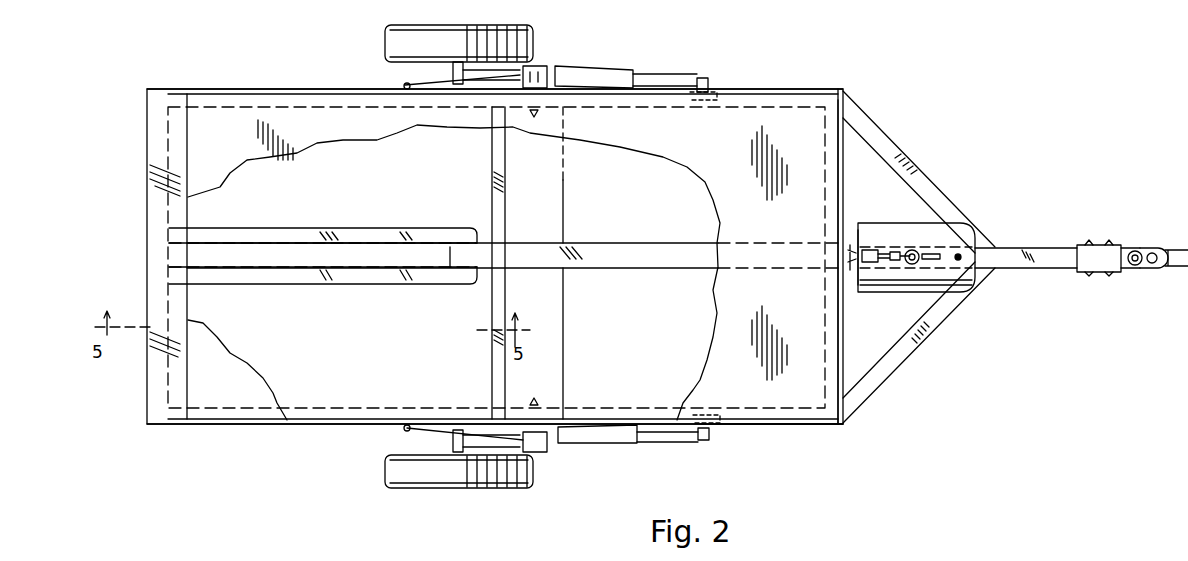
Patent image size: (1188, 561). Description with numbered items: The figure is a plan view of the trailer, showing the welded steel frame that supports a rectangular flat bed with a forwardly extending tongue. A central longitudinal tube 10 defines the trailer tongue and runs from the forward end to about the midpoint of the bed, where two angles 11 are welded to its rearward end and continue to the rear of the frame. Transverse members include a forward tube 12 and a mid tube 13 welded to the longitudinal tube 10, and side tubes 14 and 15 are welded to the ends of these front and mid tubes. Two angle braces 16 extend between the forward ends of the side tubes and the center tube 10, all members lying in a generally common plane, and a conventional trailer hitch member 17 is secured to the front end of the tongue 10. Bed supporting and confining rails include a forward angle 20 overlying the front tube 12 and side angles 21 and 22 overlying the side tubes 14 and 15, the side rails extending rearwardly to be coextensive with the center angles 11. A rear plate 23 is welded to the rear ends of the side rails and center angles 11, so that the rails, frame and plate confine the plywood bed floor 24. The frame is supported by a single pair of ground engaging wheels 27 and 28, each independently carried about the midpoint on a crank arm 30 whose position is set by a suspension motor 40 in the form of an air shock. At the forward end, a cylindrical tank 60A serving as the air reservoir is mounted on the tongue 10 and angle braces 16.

The tube 10 is at (1052, 250).
The angles 11 is at (346, 237).
The forward tube 12 is at (835, 329).
The mid tube 13 is at (490, 155).
The side tube 14 is at (752, 96).
The side tube 15 is at (605, 413).
The angle braces 16 is at (918, 176).
The trailer hitch member 17 is at (1152, 249).
The forward angle 20 is at (845, 188).
The side angle 21 is at (814, 90).
The side angle 22 is at (327, 395).
The rear plate 23 is at (160, 205).
The bed floor 24 is at (708, 169).
The wheel 27 is at (392, 40).
The right wheel 28 is at (395, 470).
The crank arm 30 is at (455, 77).
The suspension motor 40 is at (608, 73).
The cylindrical tank 60A is at (965, 228).